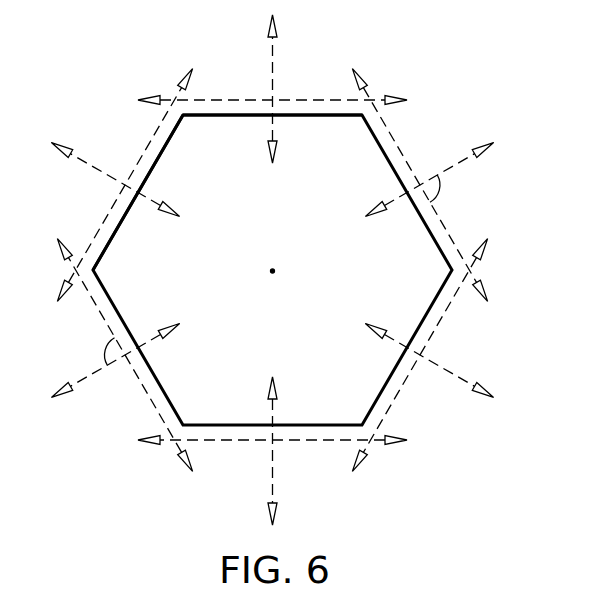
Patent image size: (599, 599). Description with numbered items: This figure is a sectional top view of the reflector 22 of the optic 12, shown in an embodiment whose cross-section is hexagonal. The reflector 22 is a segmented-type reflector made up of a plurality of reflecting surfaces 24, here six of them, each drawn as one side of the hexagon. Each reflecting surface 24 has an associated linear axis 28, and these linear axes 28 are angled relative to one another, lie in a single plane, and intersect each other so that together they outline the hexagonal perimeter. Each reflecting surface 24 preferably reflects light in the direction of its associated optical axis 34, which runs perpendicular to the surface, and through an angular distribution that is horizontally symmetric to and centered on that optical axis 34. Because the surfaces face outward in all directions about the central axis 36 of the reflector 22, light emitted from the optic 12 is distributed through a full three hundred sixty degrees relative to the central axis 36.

The optic 12 is at (403, 55).
The reflector 22 is at (325, 133).
The reflecting surfaces 24 is at (153, 166).
The linear axes 28 is at (102, 220).
The optical axis 34 is at (272, 52).
The central axis 36 is at (273, 271).